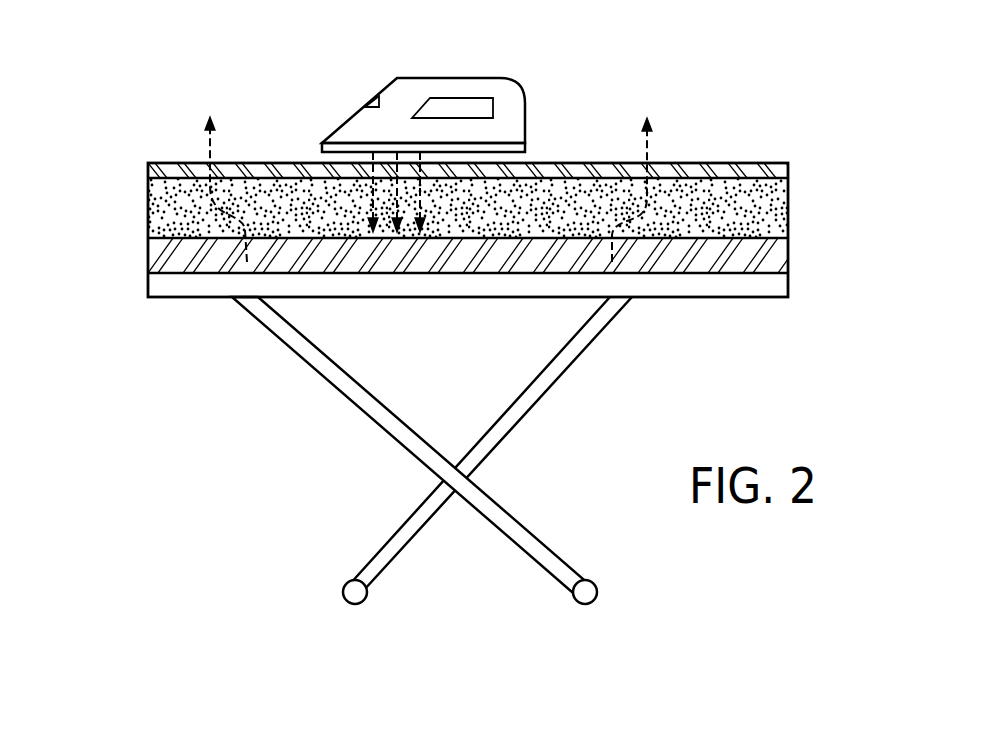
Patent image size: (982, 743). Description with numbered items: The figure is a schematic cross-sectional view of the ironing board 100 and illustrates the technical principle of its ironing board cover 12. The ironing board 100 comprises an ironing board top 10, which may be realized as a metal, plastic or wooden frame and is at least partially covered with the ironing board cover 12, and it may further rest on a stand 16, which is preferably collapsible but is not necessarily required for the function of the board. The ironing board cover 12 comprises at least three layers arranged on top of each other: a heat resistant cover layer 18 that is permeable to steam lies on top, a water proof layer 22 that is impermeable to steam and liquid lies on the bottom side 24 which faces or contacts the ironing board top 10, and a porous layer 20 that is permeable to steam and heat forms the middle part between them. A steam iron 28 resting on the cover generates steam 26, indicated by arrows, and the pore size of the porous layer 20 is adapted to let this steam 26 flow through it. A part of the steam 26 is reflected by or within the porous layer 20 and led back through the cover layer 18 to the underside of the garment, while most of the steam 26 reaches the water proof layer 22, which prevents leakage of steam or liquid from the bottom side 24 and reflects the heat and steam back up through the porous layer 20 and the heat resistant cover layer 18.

The ironing board 100 is at (167, 93).
The ironing board top 10 is at (783, 289).
The ironing board cover 12 is at (747, 163).
The stand 16 is at (532, 395).
The heat resistant cover layer 18 is at (790, 177).
The porous layer 20 is at (783, 209).
The water proof layer 22 is at (783, 261).
The bottom side 24 is at (210, 282).
The steam 26 is at (212, 163).
The steam iron 28 is at (438, 83).